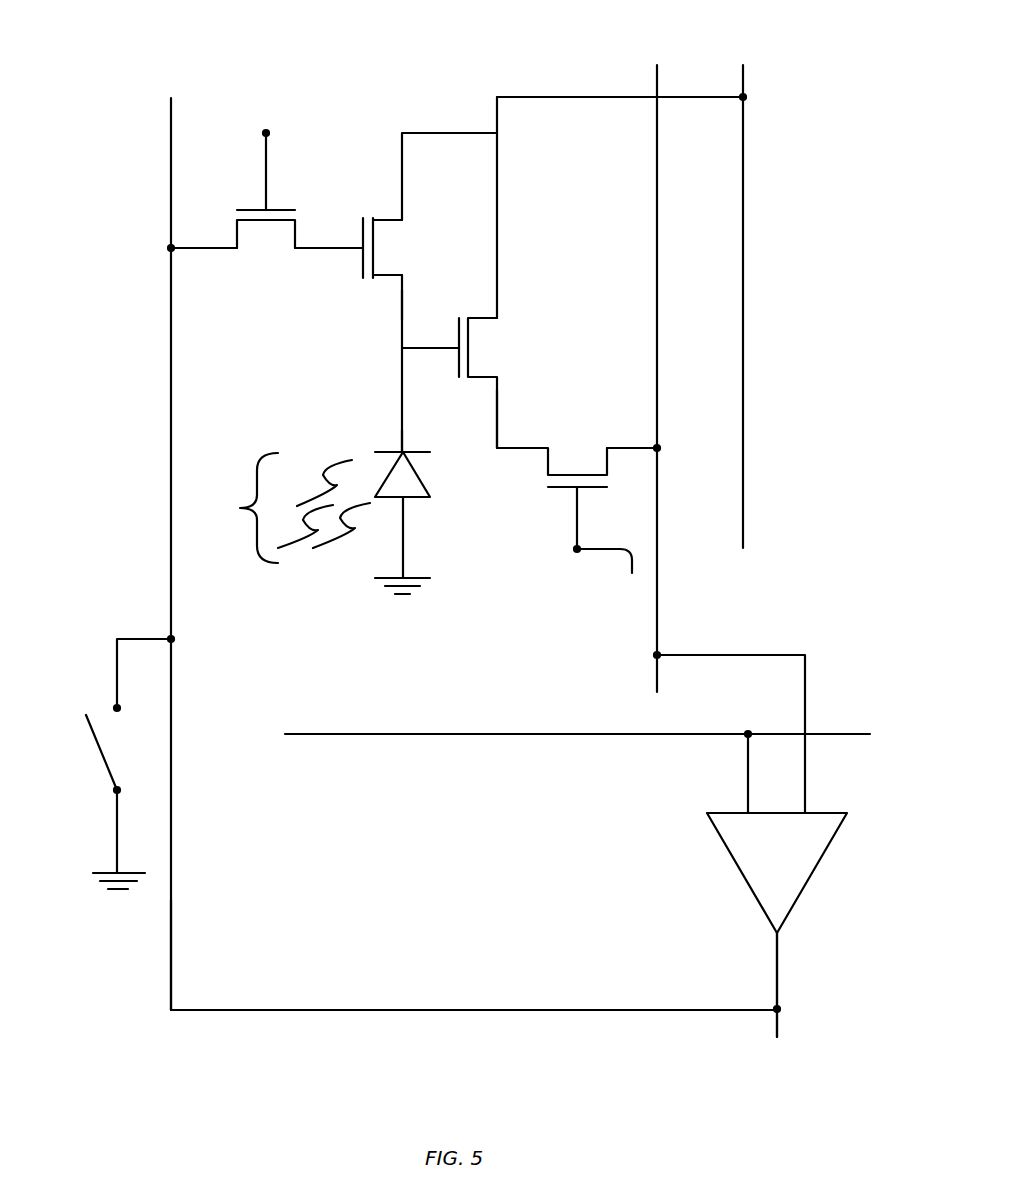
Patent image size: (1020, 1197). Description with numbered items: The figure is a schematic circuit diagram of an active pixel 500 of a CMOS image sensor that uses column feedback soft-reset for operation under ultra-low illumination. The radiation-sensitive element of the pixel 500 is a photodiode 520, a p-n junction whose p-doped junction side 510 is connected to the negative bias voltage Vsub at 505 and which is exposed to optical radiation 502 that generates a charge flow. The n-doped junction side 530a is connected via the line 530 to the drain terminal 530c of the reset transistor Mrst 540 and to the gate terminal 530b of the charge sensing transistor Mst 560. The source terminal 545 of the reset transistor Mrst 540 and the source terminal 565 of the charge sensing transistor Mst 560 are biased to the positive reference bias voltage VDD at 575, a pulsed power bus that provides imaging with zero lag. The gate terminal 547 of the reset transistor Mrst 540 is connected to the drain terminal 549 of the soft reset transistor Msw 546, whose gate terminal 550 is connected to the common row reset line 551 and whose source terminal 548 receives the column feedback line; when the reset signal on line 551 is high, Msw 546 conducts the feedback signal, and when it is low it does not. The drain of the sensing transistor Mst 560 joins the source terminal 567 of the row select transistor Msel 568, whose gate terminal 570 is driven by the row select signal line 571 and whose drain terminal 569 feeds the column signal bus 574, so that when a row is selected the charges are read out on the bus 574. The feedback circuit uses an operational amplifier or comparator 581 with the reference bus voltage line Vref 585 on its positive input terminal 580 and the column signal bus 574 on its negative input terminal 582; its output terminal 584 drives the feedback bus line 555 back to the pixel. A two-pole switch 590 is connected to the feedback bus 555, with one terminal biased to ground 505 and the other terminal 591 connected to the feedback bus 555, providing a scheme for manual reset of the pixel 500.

The active pixel 500 is at (276, 693).
The optical radiation 502 is at (232, 524).
The negative bias voltage Vsub / ground 505 is at (413, 578).
The p-doped junction side 510 is at (408, 500).
The photodiode 520 is at (420, 470).
The connection line 530 is at (402, 348).
The n-doped junction side 530a is at (405, 452).
The gate terminal of charge sensing transistor Mst 530b is at (459, 343).
The drain terminal of reset transistor Mrst 530c is at (402, 307).
The reset transistor Mrst 540 is at (385, 246).
The source terminal of reset transistor Mrst 545 is at (447, 133).
The soft reset transistor Msw 546 is at (268, 242).
The gate terminal of reset transistor Mrst 547 is at (347, 246).
The source terminal of soft reset transistor Msw 548 is at (200, 247).
The drain terminal of soft reset transistor Msw 549 is at (303, 248).
The gate terminal of soft reset transistor Msw 550 is at (266, 183).
The common row reset line 551 is at (266, 133).
The feedback bus line 555 is at (173, 967).
The charge sensing transistor Mst 560 is at (480, 356).
The source terminal of charge sensing transistor Mst 565 is at (497, 207).
The source terminal of row select transistor Msel 567 is at (497, 413).
The row select transistor Msel 568 is at (577, 464).
The drain terminal of row select transistor Msel 569 is at (635, 448).
The gate terminal of row select transistor Msel 570 is at (577, 515).
The row select signal line 571 is at (606, 578).
The column signal bus 574 is at (657, 618).
The positive reference bias voltage VDD / power bus 575 is at (743, 74).
The positive input terminal (non-inverting terminal) 580 is at (748, 775).
The operational amplifier (comparator) 581 is at (794, 868).
The negative input terminal (inverting terminal) 582 is at (805, 780).
The output terminal of operational amplifier 584 is at (777, 1009).
The reference bus voltage line Vref 585 is at (378, 734).
The two-pole switch 590 is at (117, 830).
The switch terminal 591 is at (117, 670).